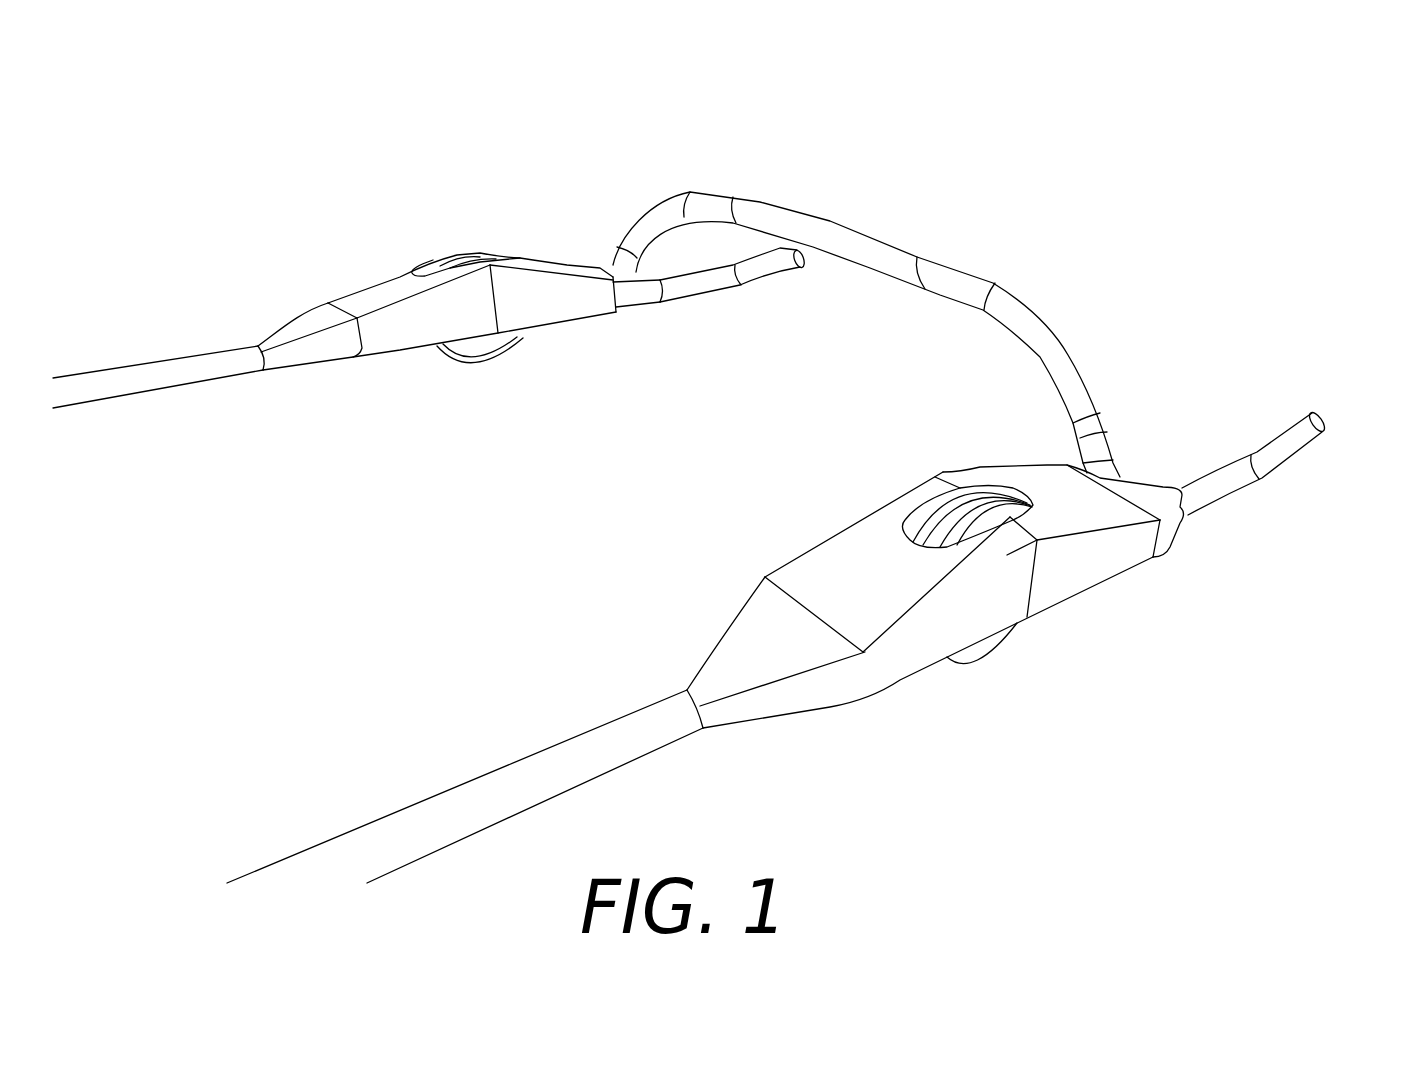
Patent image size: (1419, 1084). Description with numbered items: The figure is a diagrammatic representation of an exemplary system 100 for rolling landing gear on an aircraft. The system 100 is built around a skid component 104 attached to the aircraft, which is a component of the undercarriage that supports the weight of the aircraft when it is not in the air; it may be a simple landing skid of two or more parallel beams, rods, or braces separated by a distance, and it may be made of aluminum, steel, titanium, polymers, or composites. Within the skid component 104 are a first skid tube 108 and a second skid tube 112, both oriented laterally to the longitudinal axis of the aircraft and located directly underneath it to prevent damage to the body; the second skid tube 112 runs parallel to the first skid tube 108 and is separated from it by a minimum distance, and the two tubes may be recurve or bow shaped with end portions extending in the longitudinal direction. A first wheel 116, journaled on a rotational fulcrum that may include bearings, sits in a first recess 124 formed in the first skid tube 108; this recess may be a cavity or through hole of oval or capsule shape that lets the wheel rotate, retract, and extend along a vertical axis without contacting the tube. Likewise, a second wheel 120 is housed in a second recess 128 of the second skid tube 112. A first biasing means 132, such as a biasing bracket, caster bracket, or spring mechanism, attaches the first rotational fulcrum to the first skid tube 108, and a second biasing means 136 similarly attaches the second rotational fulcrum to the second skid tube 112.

The system for rolling landing gear 100 is at (272, 266).
The skid component 104 is at (1230, 454).
The first skid tube 108 is at (535, 746).
The second skid tube 112 is at (206, 382).
The first wheel 116 is at (957, 664).
The second wheel 120 is at (514, 351).
The first recess 124 is at (1011, 470).
The second recess 128 is at (523, 262).
The first biasing means 132 is at (1200, 605).
The second biasing means 136 is at (373, 284).